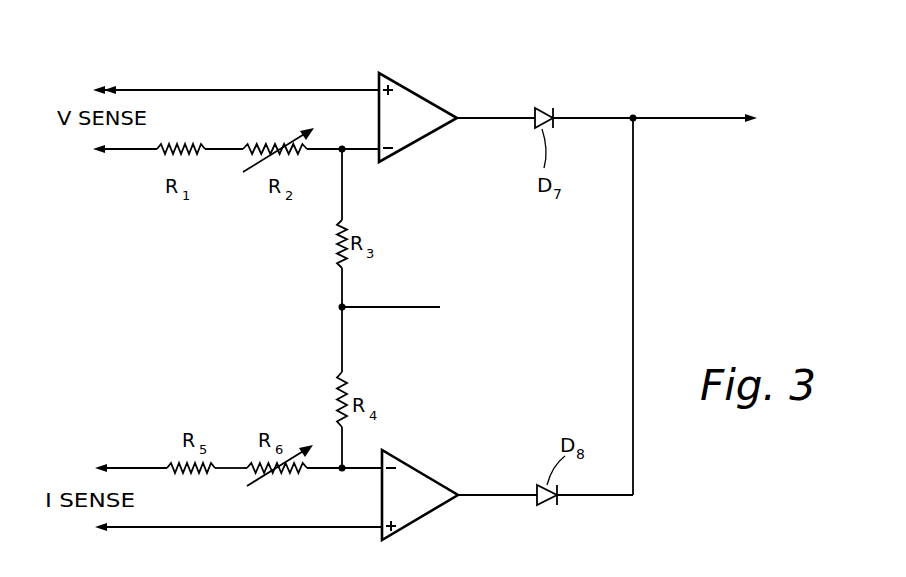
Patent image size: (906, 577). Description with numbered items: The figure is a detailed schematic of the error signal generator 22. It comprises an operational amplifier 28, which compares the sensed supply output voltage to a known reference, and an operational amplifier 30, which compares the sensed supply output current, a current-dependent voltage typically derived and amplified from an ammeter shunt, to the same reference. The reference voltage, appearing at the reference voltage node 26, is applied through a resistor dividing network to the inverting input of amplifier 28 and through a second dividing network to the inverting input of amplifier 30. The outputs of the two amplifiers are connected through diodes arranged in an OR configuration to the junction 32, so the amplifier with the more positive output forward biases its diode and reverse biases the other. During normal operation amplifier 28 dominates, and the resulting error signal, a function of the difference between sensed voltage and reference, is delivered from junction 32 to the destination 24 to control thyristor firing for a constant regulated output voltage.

The error signal generator 22 is at (418, 113).
The error signal destination (controller) 24 is at (727, 137).
The reference voltage node 26 is at (342, 307).
The operational amplifier 28 is at (405, 149).
The operational amplifier 30 is at (425, 474).
The junction 32 is at (633, 118).